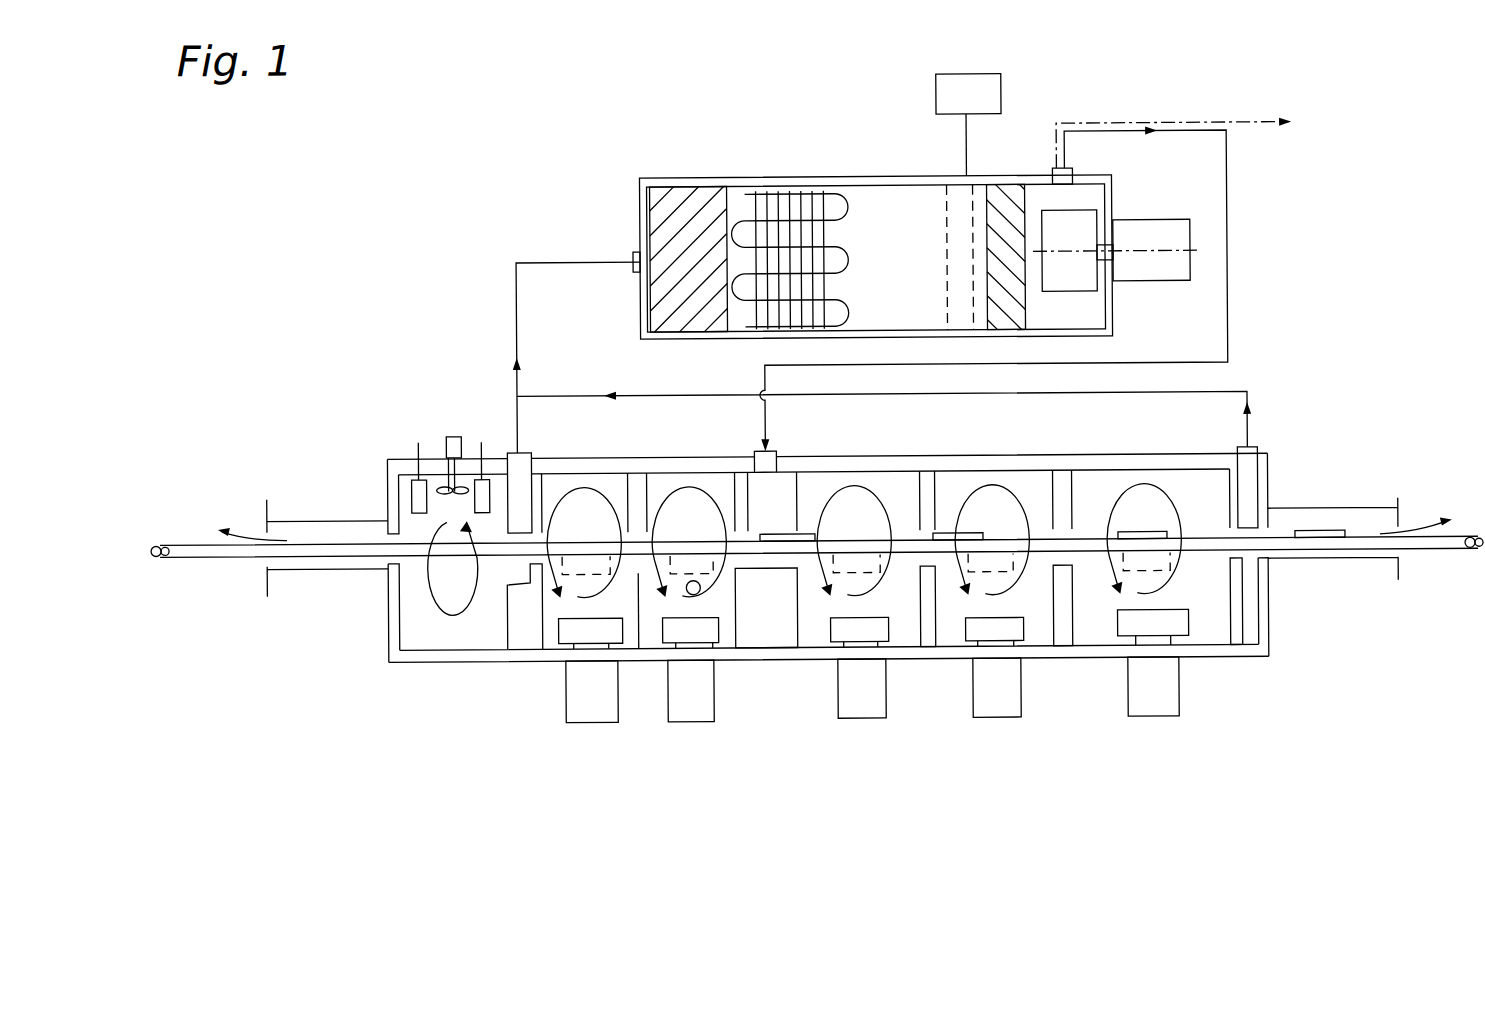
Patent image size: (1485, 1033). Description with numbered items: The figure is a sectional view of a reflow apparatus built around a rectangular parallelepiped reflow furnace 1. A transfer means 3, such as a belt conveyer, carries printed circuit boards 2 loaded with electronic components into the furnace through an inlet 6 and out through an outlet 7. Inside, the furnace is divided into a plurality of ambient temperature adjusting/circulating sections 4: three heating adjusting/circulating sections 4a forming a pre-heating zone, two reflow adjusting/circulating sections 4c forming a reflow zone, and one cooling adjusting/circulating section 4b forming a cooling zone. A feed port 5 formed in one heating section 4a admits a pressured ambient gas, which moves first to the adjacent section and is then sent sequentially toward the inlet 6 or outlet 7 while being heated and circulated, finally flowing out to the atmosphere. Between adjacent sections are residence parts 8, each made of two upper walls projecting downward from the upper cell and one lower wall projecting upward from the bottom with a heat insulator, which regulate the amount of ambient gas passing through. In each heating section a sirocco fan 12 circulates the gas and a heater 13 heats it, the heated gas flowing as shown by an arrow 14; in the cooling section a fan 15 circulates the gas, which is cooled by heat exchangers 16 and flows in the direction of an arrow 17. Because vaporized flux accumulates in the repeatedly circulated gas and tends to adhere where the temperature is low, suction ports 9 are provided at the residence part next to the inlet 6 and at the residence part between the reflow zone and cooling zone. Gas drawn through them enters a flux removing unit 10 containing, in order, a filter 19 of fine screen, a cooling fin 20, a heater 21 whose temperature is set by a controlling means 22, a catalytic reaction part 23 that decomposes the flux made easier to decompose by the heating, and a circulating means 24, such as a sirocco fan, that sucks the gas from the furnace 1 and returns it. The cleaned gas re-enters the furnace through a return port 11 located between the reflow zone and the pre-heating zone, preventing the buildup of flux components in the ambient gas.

The reflow furnace 1 is at (995, 450).
The printed circuit board 2 is at (1333, 528).
The transfer means 3 is at (1425, 560).
The ambient temperature adjusting/circulating section 4 is at (1199, 430).
The heating adjusting/circulating section 4a is at (902, 484).
The cooling adjusting/circulating section 4b is at (416, 522).
The reflow adjusting/circulating section 4c is at (556, 480).
The feed port 5 is at (693, 596).
The inlet 6 is at (1398, 529).
The outlet 7 is at (265, 528).
The residence part 8 is at (516, 488).
The suction port 9 is at (530, 444).
The flux removing unit 10 is at (888, 170).
The return port 11 is at (782, 446).
The sirocco fan 12 is at (613, 633).
The heater 13 is at (578, 573).
The arrow 14 is at (553, 585).
The fan 15 is at (443, 485).
The heat exchanger 16 is at (417, 490).
The arrow 17 is at (435, 587).
The filter 19 is at (690, 209).
The cooling fin 20 is at (796, 194).
The heater 21 is at (947, 214).
The controlling means 22 is at (1002, 99).
The catalytic reaction part 23 is at (1010, 193).
The circulating means 24 is at (1082, 217).